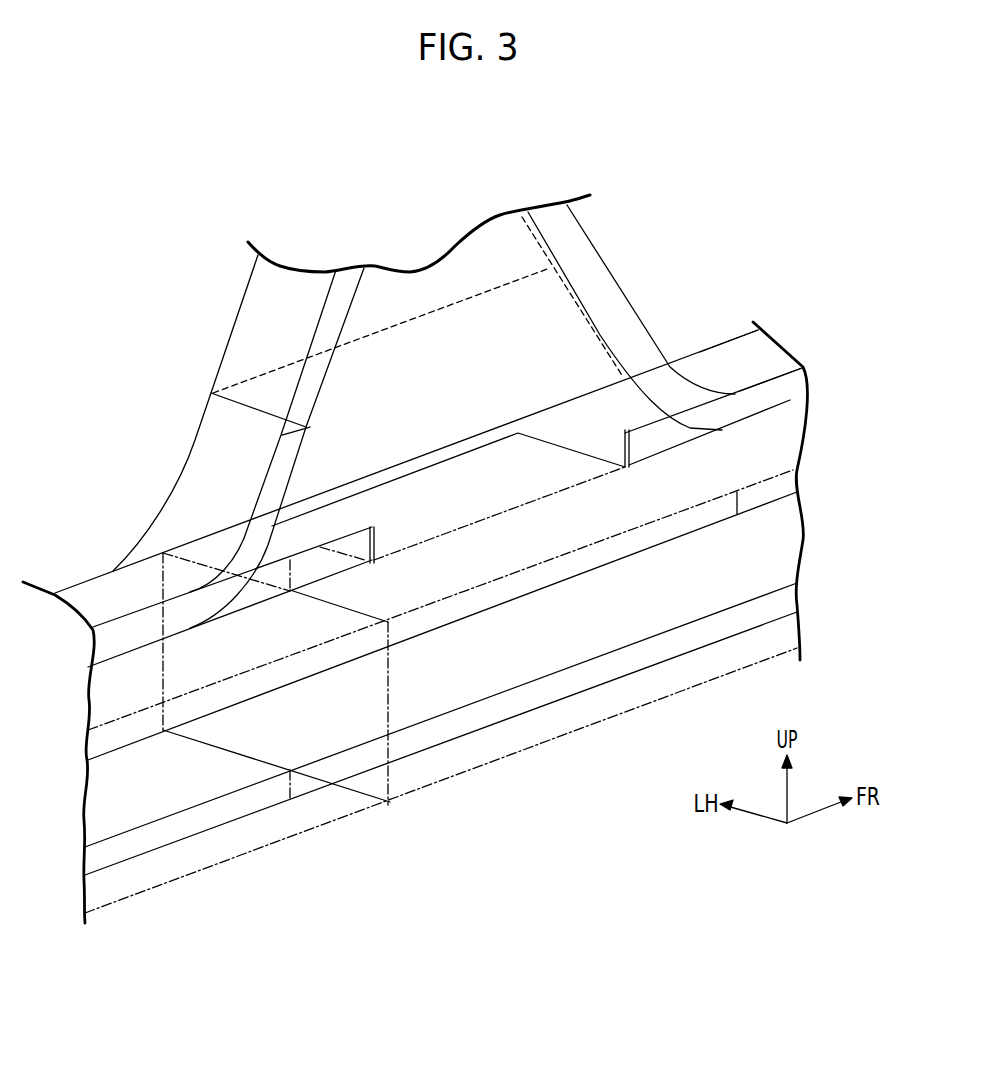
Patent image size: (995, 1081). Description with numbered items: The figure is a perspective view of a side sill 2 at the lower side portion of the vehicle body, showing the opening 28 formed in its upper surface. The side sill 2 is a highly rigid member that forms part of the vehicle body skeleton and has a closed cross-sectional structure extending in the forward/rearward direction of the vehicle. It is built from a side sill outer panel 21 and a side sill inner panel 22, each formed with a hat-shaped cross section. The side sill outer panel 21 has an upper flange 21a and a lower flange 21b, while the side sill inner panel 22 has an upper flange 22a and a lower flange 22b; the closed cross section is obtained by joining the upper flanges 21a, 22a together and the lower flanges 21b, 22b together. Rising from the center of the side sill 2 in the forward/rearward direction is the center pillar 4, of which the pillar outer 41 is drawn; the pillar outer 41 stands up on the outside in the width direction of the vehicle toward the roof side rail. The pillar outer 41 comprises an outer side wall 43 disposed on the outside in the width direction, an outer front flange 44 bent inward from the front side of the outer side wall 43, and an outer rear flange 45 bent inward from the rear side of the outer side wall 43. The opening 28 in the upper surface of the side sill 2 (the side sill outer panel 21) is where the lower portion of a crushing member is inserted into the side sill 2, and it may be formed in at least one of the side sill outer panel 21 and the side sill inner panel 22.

The side sill 2 is at (782, 330).
The center pillar 4 is at (243, 283).
The side sill outer panel 21 is at (105, 597).
The upper flange 21a is at (773, 372).
The lower flange 21b is at (770, 607).
The side sill inner panel 22 is at (740, 513).
The upper flange 22a is at (780, 388).
The lower flange 22b is at (768, 627).
The opening 28 is at (572, 450).
The pillar outer 41 is at (575, 225).
The outer side wall 43 is at (463, 278).
The outer front flange 44 is at (595, 248).
The outer rear flange 45 is at (268, 308).